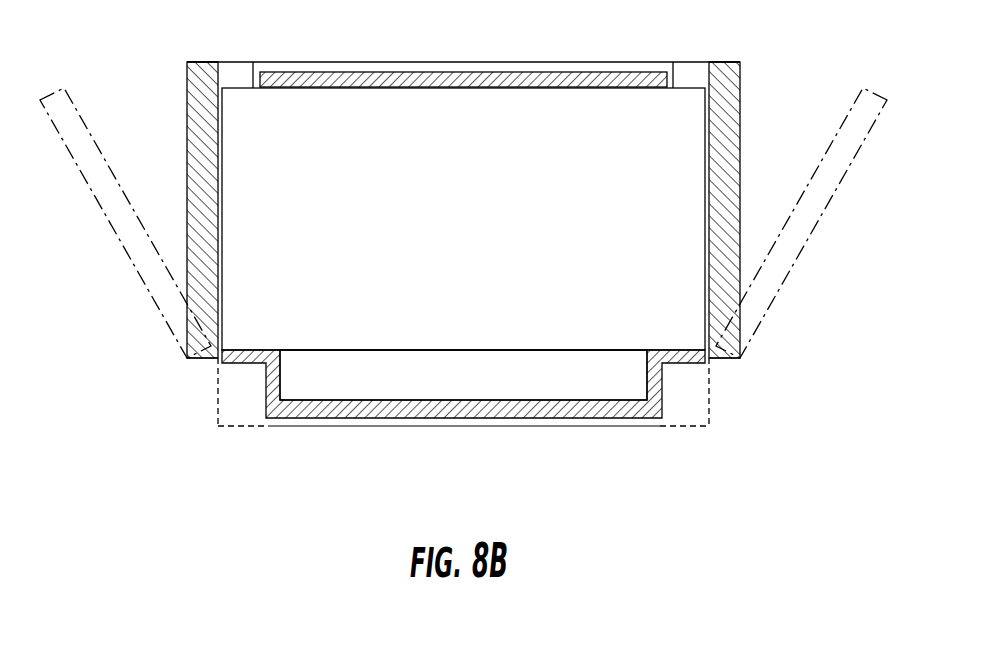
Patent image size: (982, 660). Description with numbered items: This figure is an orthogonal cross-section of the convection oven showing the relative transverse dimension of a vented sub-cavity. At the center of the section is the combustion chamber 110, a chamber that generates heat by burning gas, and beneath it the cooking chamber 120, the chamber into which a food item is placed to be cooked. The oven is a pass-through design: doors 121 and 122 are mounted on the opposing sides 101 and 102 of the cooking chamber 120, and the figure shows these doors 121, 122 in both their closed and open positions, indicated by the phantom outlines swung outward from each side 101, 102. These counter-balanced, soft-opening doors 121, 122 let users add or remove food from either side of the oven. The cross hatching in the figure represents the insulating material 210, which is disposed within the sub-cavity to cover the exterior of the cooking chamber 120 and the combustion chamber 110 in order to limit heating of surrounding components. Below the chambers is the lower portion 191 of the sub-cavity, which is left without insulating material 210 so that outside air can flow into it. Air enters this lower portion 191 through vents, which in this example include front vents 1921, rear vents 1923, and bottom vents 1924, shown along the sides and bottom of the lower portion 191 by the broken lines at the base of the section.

The side of the cooking chamber 101 is at (202, 110).
The side of the cooking chamber 102 is at (723, 110).
The combustion chamber 110 is at (482, 232).
The cooking chamber 120 is at (482, 388).
The door 121 is at (200, 62).
The door 122 is at (723, 62).
The lower portion of the sub-cavity 191 is at (237, 385).
The front vents 1921 is at (227, 403).
The rear vents 1923 is at (697, 393).
The bottom vents 1924 is at (243, 428).
The insulating material 210 is at (591, 73).